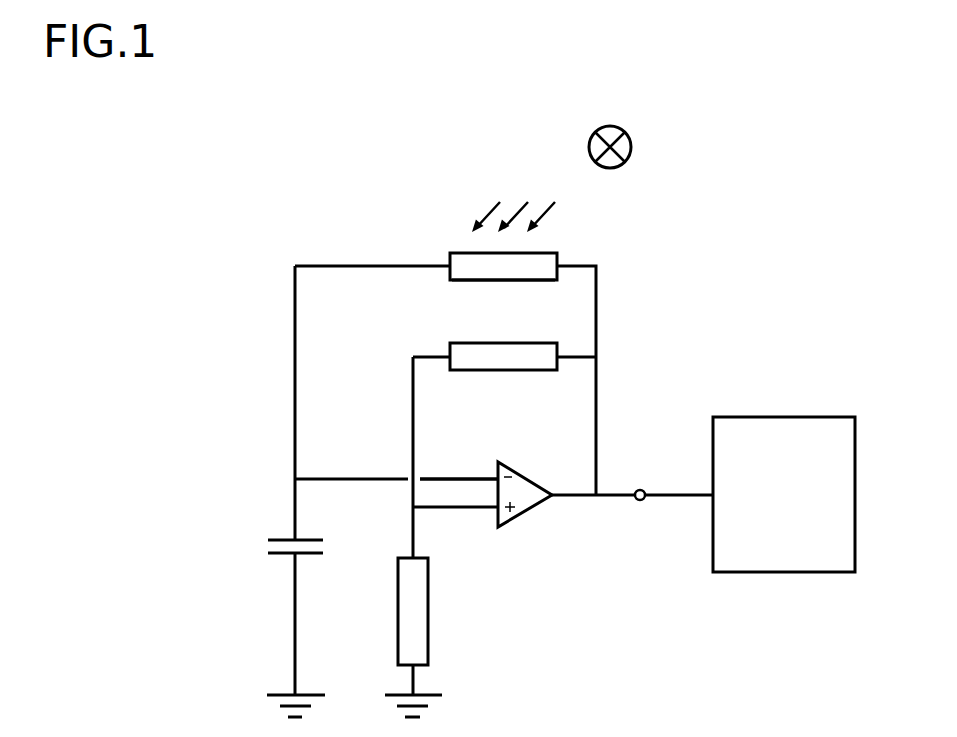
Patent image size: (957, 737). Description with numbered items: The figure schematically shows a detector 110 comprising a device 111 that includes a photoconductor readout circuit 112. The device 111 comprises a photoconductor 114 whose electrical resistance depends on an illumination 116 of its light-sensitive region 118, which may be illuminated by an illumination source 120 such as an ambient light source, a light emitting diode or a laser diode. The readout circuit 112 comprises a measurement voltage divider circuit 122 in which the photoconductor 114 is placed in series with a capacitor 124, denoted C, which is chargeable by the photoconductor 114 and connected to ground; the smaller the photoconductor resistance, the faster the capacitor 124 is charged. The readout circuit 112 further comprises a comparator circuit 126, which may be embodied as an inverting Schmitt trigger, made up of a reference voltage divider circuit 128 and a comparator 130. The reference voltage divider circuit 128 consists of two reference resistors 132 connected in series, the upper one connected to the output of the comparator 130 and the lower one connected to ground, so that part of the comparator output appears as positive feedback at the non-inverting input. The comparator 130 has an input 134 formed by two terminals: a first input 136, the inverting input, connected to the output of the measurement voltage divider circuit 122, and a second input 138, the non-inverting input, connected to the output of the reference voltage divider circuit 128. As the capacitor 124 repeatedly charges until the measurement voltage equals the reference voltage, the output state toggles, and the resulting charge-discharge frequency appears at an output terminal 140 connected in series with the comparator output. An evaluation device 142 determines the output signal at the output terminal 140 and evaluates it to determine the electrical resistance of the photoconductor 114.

The detector 110 is at (530, 94).
The device 111 is at (487, 177).
The photoconductor readout circuit 112 is at (362, 194).
The photoconductor 114 is at (455, 252).
The illumination 116 is at (536, 216).
The light-sensitive region 118 is at (541, 252).
The illumination source 120 is at (650, 148).
The measurement voltage divider circuit 122 is at (235, 268).
The capacitor 124 is at (240, 550).
The comparator circuit 126 is at (630, 322).
The reference voltage divider circuit 128 is at (395, 356).
The comparator 130 is at (555, 510).
The reference resistors 132 is at (540, 371).
The input 134 is at (474, 505).
The first input 136 is at (498, 464).
The second input 138 is at (498, 527).
The output terminal 140 is at (643, 490).
The evaluation device 142 is at (784, 494).